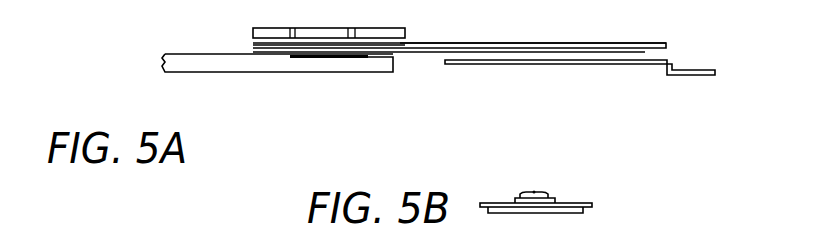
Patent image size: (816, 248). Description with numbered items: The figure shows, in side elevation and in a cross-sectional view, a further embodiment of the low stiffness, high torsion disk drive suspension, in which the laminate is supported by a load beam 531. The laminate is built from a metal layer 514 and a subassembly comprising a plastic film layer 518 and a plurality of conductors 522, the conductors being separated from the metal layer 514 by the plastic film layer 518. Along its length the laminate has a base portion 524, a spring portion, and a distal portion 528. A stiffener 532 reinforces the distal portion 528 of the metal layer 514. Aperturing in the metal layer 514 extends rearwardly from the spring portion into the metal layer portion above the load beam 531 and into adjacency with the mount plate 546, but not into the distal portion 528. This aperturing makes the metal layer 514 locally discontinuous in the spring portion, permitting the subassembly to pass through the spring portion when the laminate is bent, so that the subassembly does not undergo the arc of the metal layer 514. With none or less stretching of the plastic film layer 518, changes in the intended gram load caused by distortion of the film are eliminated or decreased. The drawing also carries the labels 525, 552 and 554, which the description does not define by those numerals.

In FIG. 5B, the metal layer 514 is at (492, 202).
In FIG. 5B, the plastic film layer 518 is at (523, 192).
In FIG. 5B, the conductors 522 is at (533, 190).
In FIG. 5A, the base portion 524 is at (387, 53).
In FIG. 5A, the upper plate 525 is at (433, 42).
In FIG. 5A, the distal portion 528 is at (645, 42).
In FIG. 5A, the load beam 531 is at (645, 52).
In FIG. 5A, the stiffener 532 is at (623, 66).
In FIG. 5B, the stiffener 532 is at (563, 214).
In FIG. 5A, the mount plate 546 is at (370, 28).
In FIG. 5A, the body 552 is at (202, 65).
In FIG. 5A, the flex layer 554 is at (253, 45).